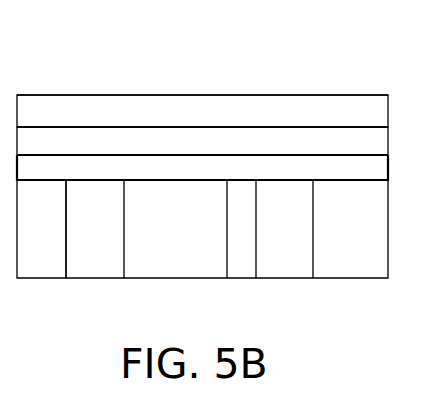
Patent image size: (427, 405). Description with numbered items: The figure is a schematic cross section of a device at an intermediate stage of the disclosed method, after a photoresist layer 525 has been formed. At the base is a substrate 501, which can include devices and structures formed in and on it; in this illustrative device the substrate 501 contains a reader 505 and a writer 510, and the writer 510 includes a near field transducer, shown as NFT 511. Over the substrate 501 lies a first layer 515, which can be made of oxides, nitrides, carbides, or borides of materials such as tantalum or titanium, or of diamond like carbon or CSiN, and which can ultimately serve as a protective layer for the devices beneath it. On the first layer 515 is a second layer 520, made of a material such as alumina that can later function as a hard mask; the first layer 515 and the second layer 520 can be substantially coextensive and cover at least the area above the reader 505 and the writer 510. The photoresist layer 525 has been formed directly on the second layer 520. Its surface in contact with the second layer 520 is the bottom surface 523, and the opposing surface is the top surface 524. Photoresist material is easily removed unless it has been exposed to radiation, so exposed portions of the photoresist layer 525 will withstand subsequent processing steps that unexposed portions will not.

The substrate 501 is at (58, 240).
The reader 505 is at (110, 250).
The writer 510 is at (313, 280).
The NFT 511 is at (239, 253).
The first layer 515 is at (108, 179).
The second layer 520 is at (158, 150).
The bottom surface 523 is at (213, 128).
The top surface 524 is at (68, 95).
The photoresist layer 525 is at (158, 118).